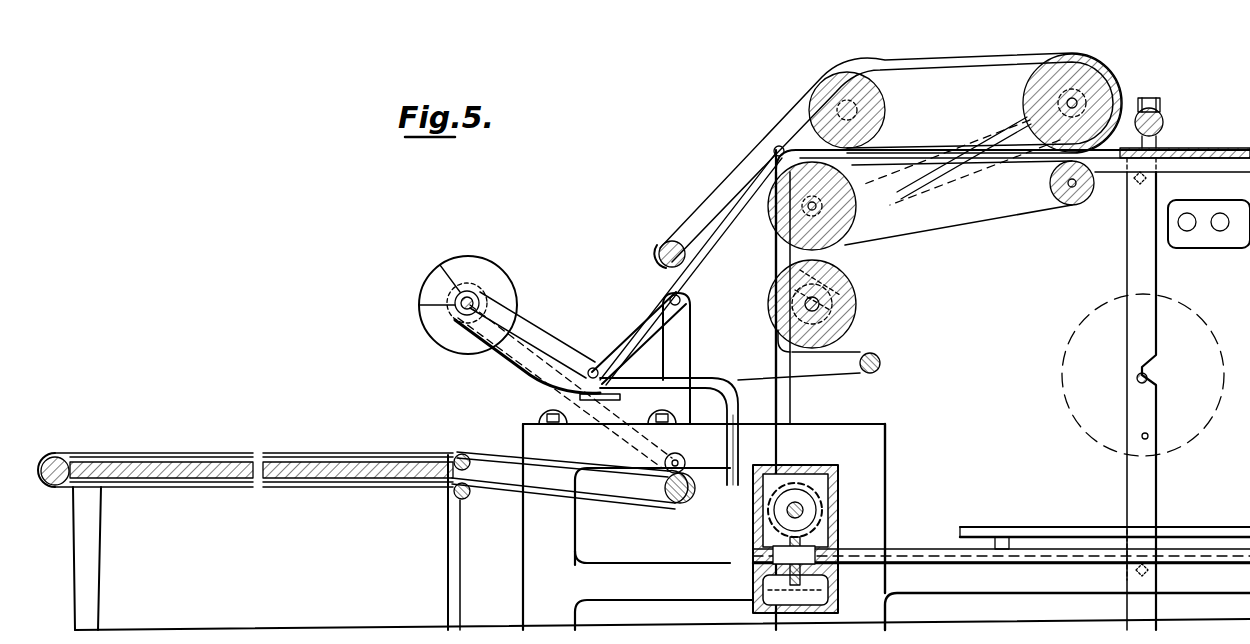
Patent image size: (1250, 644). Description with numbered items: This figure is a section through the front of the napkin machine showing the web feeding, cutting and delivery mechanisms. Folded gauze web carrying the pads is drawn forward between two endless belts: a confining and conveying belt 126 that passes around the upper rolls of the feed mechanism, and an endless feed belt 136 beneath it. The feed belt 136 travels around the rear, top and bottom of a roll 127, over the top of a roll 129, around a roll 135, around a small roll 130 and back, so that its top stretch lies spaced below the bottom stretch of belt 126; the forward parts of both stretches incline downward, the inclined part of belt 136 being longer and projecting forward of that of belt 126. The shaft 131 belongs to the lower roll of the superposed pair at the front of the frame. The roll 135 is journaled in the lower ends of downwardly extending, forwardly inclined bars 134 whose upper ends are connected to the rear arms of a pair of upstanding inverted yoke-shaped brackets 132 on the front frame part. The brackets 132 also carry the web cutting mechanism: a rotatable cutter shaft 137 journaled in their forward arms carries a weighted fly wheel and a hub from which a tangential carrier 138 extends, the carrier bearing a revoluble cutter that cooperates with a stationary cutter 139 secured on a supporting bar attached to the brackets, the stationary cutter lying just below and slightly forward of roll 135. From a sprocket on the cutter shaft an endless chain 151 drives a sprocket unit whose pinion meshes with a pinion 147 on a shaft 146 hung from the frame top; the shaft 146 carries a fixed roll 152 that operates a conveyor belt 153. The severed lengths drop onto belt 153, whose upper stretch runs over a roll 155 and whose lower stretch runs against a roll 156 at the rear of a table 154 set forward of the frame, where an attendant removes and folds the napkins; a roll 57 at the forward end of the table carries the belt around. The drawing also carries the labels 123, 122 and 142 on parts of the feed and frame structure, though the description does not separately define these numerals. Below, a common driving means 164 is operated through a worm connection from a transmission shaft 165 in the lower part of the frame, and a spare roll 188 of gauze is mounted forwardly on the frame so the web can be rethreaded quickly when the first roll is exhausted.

The roller 57 is at (62, 457).
The table 154 is at (380, 478).
The roll 155 is at (470, 464).
The roll 156 is at (470, 495).
The conveyor belt 153 is at (478, 450).
The roll 152 is at (672, 500).
The shaft 146 is at (690, 496).
The pinion 147 is at (686, 470).
The stationary cutter 139 is at (553, 400).
The cutter shaft 137 is at (480, 298).
The endless chain 151 is at (515, 316).
The carrier 138 is at (540, 338).
The bars 134 is at (645, 340).
The roll 135 is at (690, 345).
The endless confining and conveying belt 126 is at (975, 58).
The roll 129 is at (845, 215).
The endless feed belt 136 is at (760, 225).
The roll 127 is at (1070, 208).
The pulley 123 is at (790, 305).
The shaft of roll 129' 131 is at (830, 283).
The frame 122 is at (774, 258).
The roll 130 is at (880, 358).
The inverted yoke-shaped brackets 132 is at (690, 378).
The tube 142 is at (730, 410).
The common driving means 164 is at (805, 500).
The transmission shaft 165 is at (895, 555).
The roll 188 is at (1200, 318).